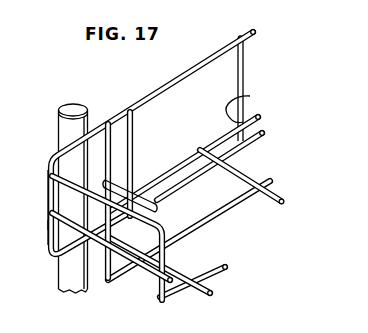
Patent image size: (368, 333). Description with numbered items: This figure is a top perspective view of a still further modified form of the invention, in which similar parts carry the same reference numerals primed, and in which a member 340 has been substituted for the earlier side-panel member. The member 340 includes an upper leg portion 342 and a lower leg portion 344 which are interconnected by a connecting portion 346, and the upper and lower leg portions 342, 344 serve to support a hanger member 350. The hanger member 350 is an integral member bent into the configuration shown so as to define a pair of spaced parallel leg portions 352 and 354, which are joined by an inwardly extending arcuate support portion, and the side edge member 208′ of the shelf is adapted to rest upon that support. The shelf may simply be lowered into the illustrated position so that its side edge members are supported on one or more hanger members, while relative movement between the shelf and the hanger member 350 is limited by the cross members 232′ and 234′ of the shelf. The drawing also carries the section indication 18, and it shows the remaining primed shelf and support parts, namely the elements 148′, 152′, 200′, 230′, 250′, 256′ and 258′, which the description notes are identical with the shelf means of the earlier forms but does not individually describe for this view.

The section line 18- 18 is at (126, 118).
The post 148′ is at (245, 78).
The post 152′ is at (57, 127).
The hanger rod 200′ is at (168, 223).
The side edge member 208′ is at (255, 141).
The hanger rod 230′ is at (182, 268).
The cross member 232′ is at (214, 295).
The cross member 234′ is at (289, 200).
The clip 250′ is at (149, 193).
The hanger rod 256′ is at (243, 206).
The hanger rod 258′ is at (228, 266).
The member 340 is at (47, 221).
The upper leg portion 342 is at (173, 81).
The lower leg portion 344 is at (250, 102).
The connecting portion 346 is at (47, 203).
The hanger member 350 is at (136, 124).
The leg portion 352 is at (111, 122).
The leg portion 354 is at (139, 142).